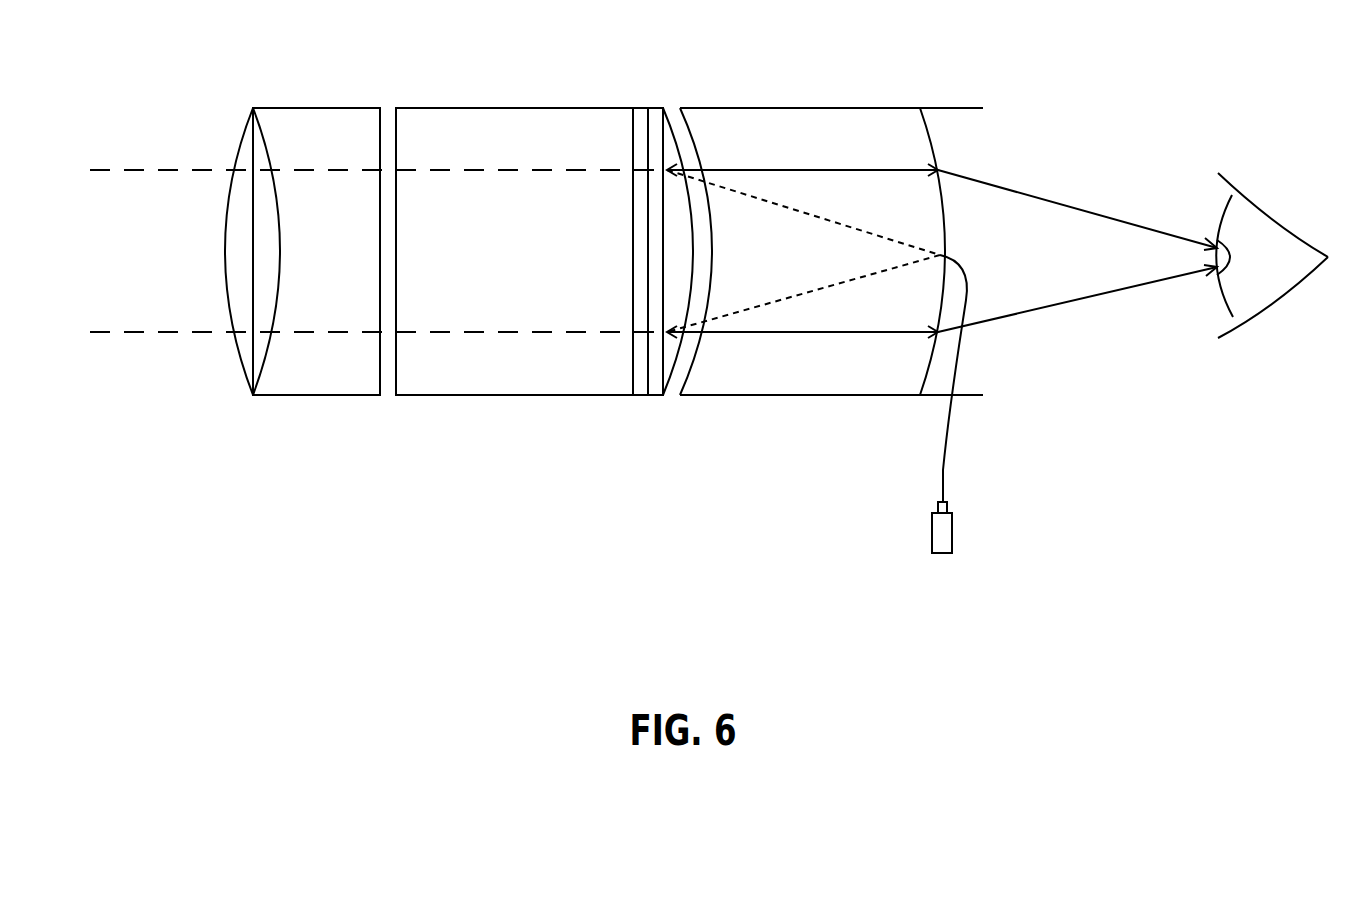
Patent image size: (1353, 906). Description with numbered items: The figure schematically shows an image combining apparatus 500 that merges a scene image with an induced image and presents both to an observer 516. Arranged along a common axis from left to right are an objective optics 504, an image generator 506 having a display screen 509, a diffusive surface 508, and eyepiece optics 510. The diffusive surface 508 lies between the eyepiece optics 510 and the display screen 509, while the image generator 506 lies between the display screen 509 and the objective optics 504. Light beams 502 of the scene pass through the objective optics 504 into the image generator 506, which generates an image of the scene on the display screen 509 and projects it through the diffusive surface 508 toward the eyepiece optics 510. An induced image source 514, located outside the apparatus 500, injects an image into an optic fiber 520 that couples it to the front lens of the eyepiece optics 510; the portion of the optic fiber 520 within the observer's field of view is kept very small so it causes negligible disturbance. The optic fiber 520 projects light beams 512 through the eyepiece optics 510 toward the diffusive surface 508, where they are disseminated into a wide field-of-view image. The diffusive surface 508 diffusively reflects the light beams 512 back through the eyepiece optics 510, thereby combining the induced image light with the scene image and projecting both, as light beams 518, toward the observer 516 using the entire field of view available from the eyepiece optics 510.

The image combining apparatus 500 is at (410, 523).
The light beams 502 is at (170, 172).
The objective optics 504 is at (317, 395).
The image generator 506 is at (535, 395).
The diffusive surface 508 is at (652, 402).
The display screen 509 is at (642, 117).
The eyepiece optics 510 is at (825, 398).
The light beams 512 is at (885, 238).
The induced image source 514 is at (952, 532).
The observer 516 is at (1285, 272).
The light beams 518 is at (705, 172).
The optic fiber 520 is at (943, 475).